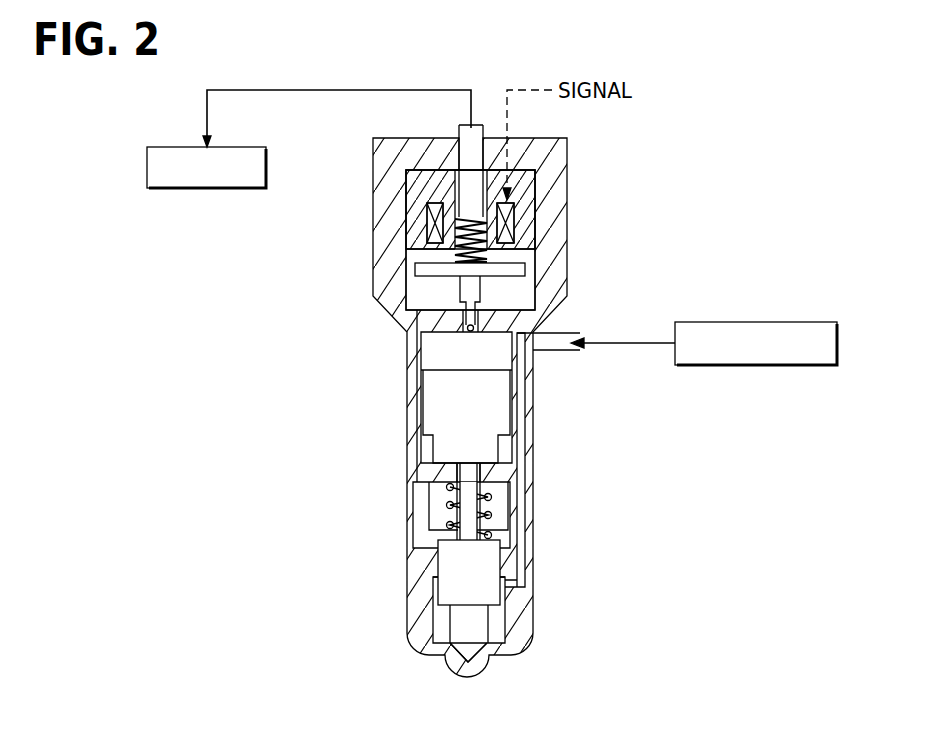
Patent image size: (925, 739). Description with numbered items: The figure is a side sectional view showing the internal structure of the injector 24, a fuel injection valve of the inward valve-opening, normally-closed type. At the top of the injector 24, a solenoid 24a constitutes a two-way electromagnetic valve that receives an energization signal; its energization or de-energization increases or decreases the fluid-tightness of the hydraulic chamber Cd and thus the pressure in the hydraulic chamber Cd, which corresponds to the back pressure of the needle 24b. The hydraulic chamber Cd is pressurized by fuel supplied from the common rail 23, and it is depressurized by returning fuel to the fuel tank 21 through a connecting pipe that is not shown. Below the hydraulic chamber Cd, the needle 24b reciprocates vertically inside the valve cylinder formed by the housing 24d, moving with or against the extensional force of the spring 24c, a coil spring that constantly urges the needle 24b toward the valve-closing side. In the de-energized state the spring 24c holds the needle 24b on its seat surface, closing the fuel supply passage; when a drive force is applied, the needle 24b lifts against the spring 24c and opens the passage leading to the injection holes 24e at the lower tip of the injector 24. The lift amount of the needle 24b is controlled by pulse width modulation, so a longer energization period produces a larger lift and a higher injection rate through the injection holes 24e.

The fuel tank 21 is at (172, 146).
The common rail 23 is at (718, 322).
The injector 24 is at (636, 171).
The solenoid 24a is at (427, 223).
The needle 24b is at (440, 573).
The spring 24c is at (430, 503).
The housing 24d is at (567, 213).
The injection holes 24e is at (488, 657).
The hydraulic chamber Cd is at (441, 363).